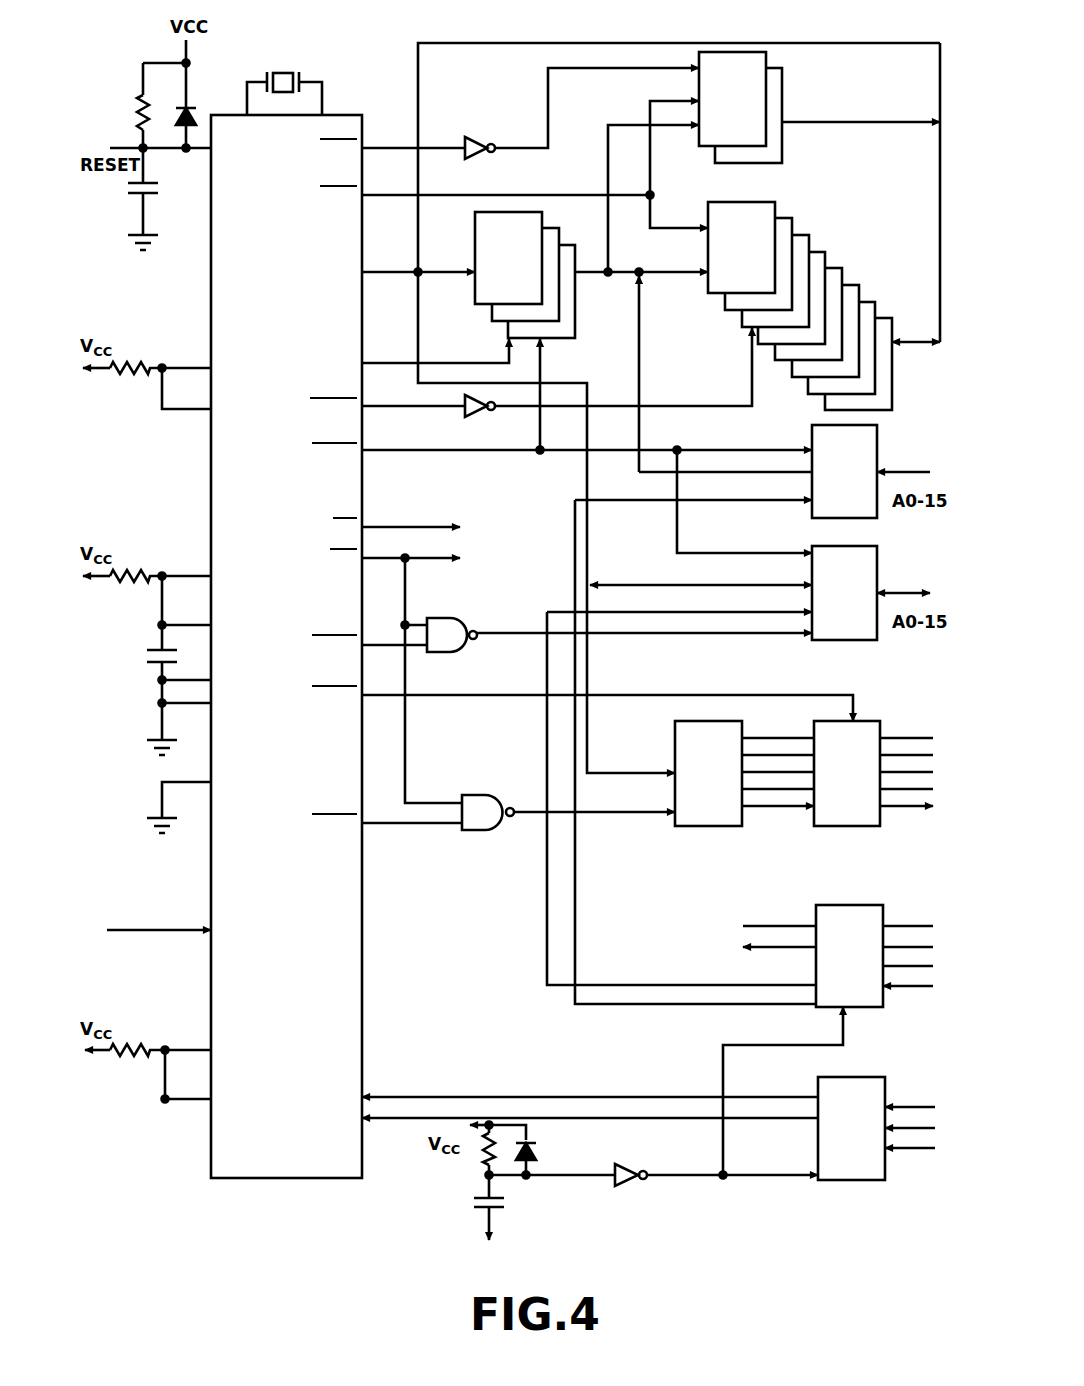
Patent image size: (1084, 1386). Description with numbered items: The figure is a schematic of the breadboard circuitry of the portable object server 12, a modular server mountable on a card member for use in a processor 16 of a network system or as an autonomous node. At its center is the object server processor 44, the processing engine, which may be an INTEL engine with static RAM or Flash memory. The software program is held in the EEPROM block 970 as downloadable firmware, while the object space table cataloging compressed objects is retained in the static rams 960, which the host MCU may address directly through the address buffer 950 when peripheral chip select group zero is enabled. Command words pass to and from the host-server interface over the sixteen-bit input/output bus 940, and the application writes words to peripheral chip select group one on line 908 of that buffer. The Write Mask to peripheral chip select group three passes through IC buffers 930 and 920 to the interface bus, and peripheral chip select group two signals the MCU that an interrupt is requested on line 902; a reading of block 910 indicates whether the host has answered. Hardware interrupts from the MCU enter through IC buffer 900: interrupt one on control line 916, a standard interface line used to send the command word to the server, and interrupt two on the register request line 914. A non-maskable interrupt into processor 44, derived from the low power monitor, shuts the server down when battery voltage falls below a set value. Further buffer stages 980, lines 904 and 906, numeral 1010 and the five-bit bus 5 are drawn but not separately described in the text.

The object server processor 44 is at (290, 503).
The EEPROM block 970 is at (747, 111).
The memory 980 is at (525, 270).
The static rams 960 is at (757, 260).
The address buffer 950 is at (861, 483).
The 16-bit input/output bus 940 is at (861, 605).
The IC buffer 930 is at (725, 785).
The IC buffer 920 is at (863, 785).
The block 910 is at (866, 966).
The IC buffer 900 is at (868, 1138).
The interrupt request line 902 is at (741, 694).
The PCS0 chip select line 904 is at (427, 452).
The NAND gate 906 is at (530, 810).
The PCS1 line 908 is at (655, 634).
The portable object server 12 is at (890, 881).
The NMI line 1010 is at (137, 930).
The control line 916 is at (913, 1103).
The register request line 914 is at (925, 1128).
The processor 16 is at (651, 55).
The 5-bit bus 5 is at (624, 786).